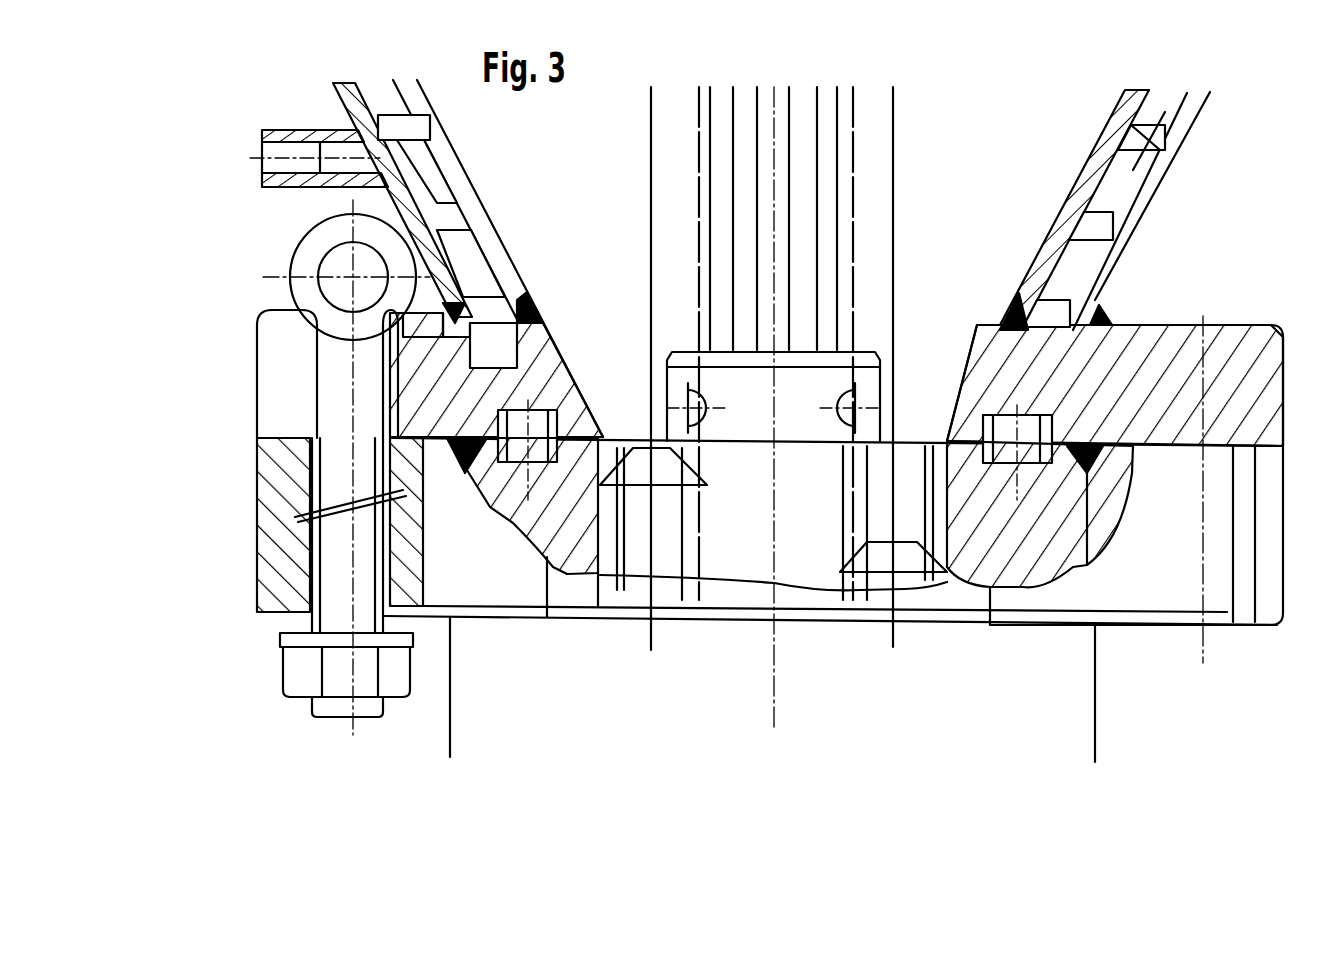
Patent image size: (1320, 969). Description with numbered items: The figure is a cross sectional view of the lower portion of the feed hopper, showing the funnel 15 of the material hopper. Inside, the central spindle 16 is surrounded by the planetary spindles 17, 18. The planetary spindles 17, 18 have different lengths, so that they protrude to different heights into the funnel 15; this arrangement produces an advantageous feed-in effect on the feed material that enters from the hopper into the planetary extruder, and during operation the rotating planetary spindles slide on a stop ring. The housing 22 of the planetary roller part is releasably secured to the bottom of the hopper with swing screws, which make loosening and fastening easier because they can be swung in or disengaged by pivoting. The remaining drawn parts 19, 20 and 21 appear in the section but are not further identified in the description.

The strut 15 is at (1147, 193).
The central body 16 is at (810, 553).
The left support element 17 is at (642, 560).
The right support element 18 is at (913, 573).
The block 19 is at (1211, 356).
The eye bolt 20 is at (337, 473).
The curved hatched part 21 is at (962, 573).
The rod 22 is at (448, 753).